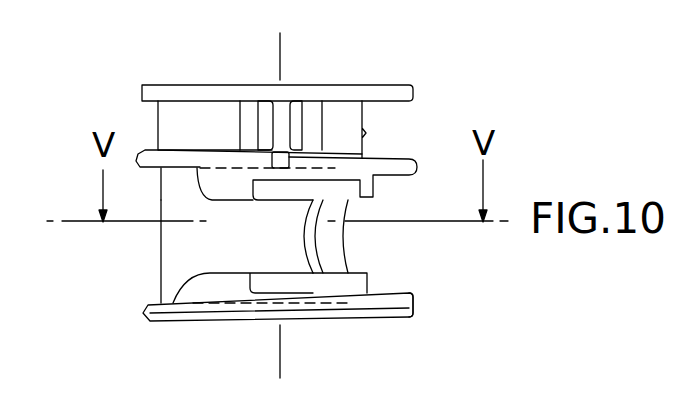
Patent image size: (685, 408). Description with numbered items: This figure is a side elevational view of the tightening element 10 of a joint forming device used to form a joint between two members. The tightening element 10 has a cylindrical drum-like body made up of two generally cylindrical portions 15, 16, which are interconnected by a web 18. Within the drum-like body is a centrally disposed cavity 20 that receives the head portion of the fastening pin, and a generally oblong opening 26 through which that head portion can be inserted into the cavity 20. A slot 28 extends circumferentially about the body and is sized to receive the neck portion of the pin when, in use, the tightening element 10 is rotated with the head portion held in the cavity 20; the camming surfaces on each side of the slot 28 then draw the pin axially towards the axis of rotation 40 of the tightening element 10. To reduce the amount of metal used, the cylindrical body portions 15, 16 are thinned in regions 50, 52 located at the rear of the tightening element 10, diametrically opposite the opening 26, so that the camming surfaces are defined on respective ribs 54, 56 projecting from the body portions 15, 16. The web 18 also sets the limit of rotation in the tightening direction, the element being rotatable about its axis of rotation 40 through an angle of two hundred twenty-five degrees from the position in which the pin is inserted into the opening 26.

The tightening element 10 is at (407, 317).
The cylindrical portion 15 is at (170, 128).
The cylindrical portion 16 is at (198, 322).
The web 18 is at (173, 283).
The cavity 20 is at (264, 253).
The opening 26 is at (193, 240).
The slot 28 is at (358, 233).
The axis of rotation 40 is at (277, 53).
The thinned region 50 is at (386, 196).
The thinned region 52 is at (382, 272).
The rib 54 is at (349, 197).
The rib 56 is at (352, 275).